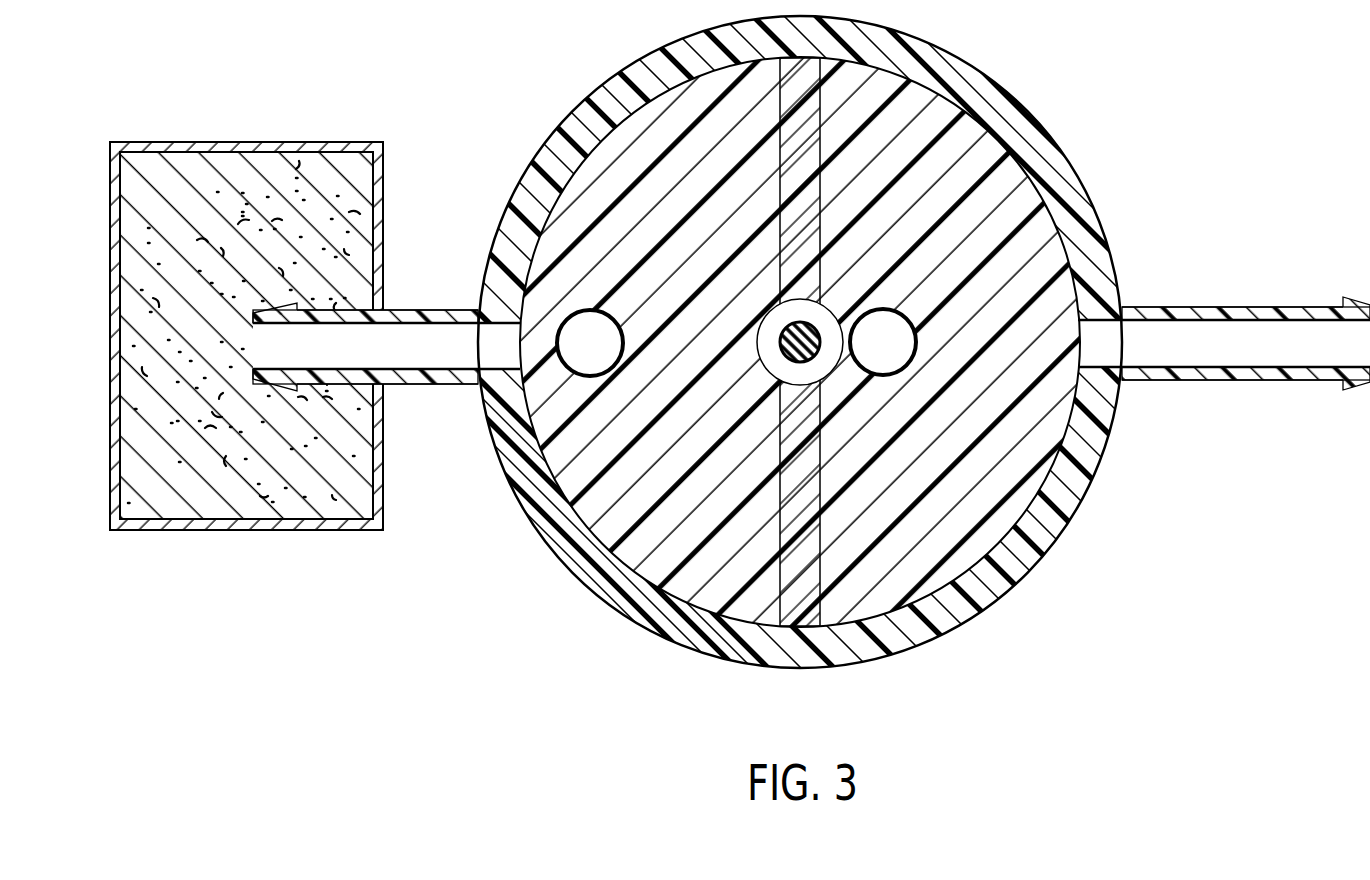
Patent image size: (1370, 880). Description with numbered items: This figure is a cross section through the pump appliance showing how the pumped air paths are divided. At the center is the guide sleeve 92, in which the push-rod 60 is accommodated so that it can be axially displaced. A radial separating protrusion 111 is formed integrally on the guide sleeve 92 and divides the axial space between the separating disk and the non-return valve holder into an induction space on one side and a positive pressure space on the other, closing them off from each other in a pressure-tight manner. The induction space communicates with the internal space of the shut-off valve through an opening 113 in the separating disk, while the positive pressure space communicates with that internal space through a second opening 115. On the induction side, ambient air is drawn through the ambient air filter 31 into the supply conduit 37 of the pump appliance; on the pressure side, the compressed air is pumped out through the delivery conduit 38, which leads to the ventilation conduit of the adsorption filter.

The ambient air filter 31 is at (140, 488).
The supply conduit 37 is at (418, 348).
The delivery conduit 38 is at (1265, 338).
The push-rod 60 is at (782, 344).
The guide sleeve 92 is at (828, 362).
The radial separating protrusion 111 is at (808, 210).
The opening 113 is at (610, 325).
The opening 115 is at (913, 342).